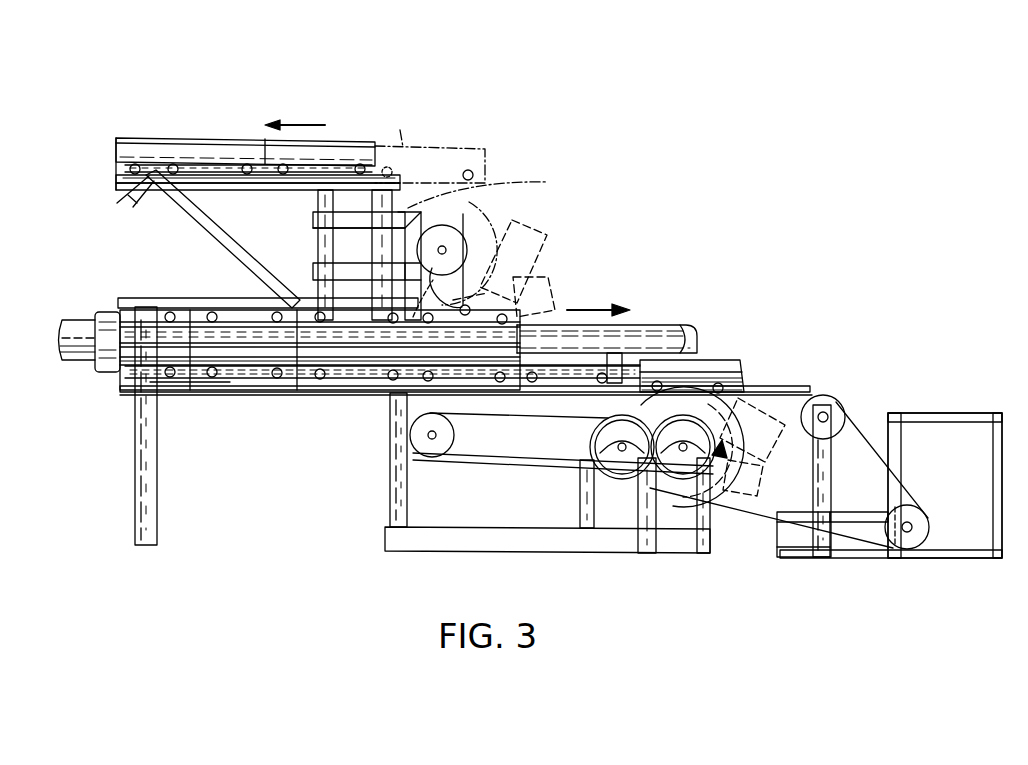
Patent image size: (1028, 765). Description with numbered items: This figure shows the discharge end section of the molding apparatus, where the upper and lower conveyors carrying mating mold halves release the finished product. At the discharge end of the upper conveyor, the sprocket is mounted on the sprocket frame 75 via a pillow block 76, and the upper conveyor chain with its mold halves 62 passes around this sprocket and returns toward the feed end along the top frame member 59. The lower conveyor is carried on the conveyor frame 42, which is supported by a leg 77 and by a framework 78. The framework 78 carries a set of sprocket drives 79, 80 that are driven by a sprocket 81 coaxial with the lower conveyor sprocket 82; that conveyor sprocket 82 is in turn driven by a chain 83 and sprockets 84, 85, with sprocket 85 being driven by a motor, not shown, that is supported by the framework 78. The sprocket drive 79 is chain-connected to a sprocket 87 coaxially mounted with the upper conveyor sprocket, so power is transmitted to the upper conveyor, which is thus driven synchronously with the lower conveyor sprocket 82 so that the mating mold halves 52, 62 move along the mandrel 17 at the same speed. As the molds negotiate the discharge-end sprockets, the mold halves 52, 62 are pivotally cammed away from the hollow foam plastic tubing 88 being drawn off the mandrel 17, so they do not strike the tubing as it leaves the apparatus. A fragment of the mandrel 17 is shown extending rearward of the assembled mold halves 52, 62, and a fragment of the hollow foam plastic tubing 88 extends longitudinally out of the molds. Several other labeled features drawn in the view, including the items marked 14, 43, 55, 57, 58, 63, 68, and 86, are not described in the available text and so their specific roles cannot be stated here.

The tape applying arc path 14 is at (492, 185).
The mandrel 17 is at (66, 360).
The conveyor frame 42 is at (282, 402).
The conveyor rail 43 is at (322, 392).
The mold halves 52 is at (255, 382).
The guide 55 is at (212, 378).
The direction of travel 57 is at (112, 243).
The top plate 58 is at (132, 298).
The top frame member 59 is at (258, 188).
The mold halves 62 is at (245, 150).
The pivots 63 is at (172, 164).
The diagonal guide bar 68 is at (208, 239).
The sprocket frame 75 is at (348, 232).
The pillow block 76 is at (430, 272).
The leg 77 is at (158, 488).
The framework 78 is at (382, 489).
The sprocket drive 79 is at (415, 456).
The sprocket drive 80 is at (593, 472).
The sprocket 81 is at (683, 475).
The conveyor sprocket 82 is at (735, 372).
The chain 83 is at (833, 405).
The sprocket 84 is at (845, 408).
The sprocket 85 is at (929, 528).
The frame 86 is at (935, 412).
The sprocket 87 is at (480, 225).
The hollow foam plastic tubing 88 is at (105, 312).